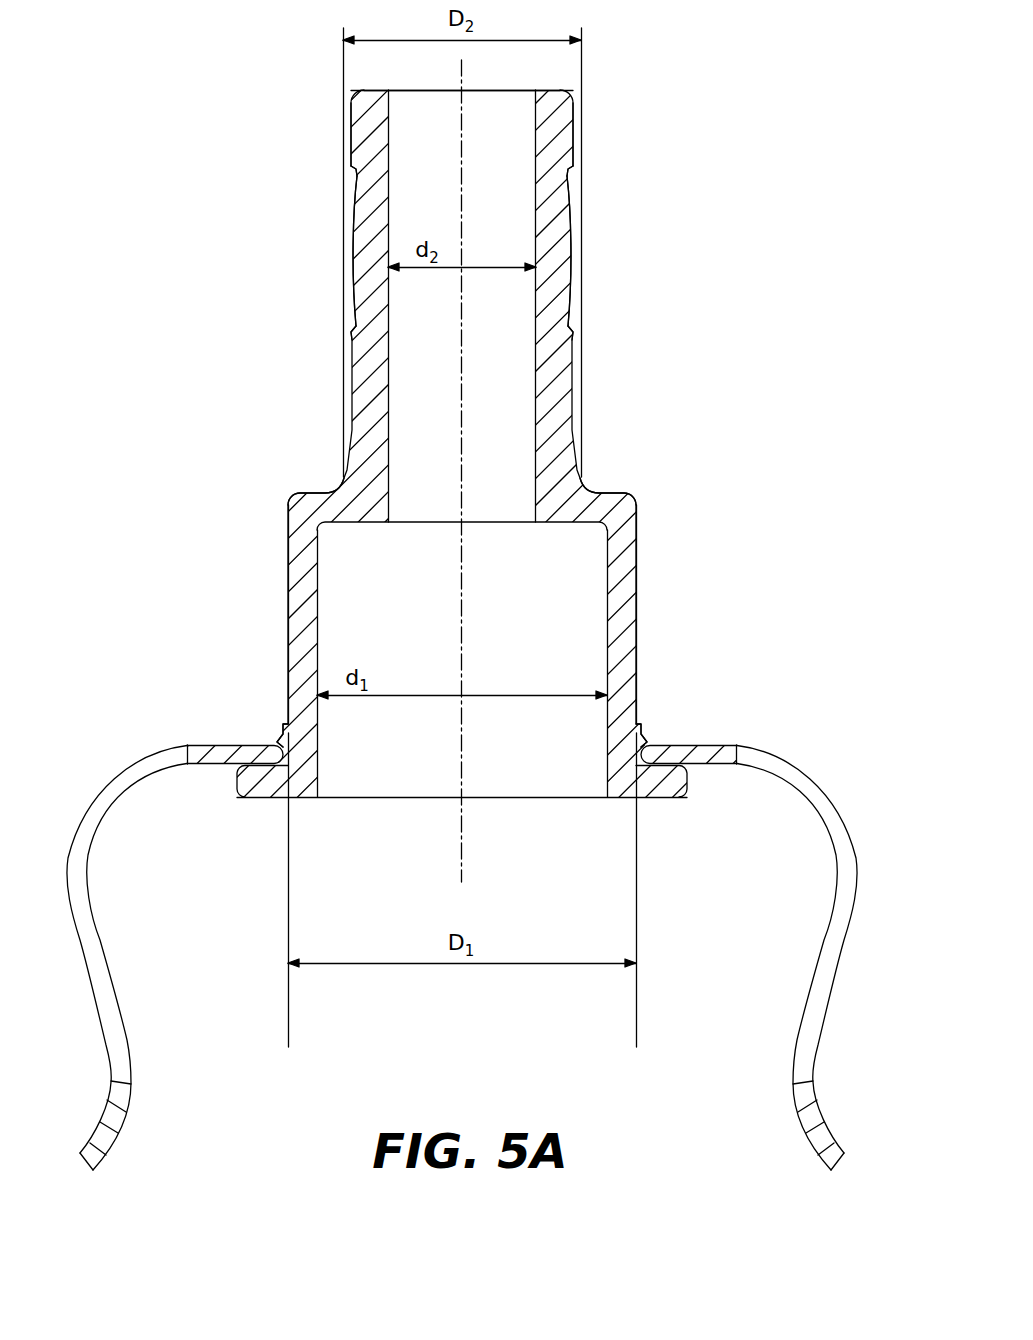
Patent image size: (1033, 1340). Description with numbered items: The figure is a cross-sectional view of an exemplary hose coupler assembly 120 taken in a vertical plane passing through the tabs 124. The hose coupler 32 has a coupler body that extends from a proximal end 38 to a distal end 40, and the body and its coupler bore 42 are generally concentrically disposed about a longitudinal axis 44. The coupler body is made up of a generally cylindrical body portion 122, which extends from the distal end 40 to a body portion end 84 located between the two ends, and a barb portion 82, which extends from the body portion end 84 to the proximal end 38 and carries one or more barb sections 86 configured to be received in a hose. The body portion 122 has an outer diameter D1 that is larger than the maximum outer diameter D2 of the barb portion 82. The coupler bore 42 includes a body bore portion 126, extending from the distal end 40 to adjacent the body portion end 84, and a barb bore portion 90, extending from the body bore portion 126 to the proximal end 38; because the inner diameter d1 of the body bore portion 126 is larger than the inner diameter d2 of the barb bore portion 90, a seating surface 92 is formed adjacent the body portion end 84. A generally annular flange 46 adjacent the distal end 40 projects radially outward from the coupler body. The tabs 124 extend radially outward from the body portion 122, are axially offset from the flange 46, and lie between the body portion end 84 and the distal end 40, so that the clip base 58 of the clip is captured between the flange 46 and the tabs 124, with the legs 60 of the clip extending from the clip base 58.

The hose coupler assembly 120 is at (727, 153).
The proximal end 38 is at (325, 77).
The coupler bore 42 is at (490, 89).
The longitudinal axis 44 is at (461, 60).
The barb bore portion 90 is at (503, 215).
The barb section 86 is at (692, 182).
The barb portion 82 is at (358, 280).
The hose coupler 32 is at (568, 348).
The body portion end 84 is at (641, 487).
The seating surface 92 is at (362, 525).
The body portion 122 is at (627, 592).
The body bore portion 126 is at (587, 660).
The distal end 40 is at (383, 812).
The flange 46 is at (268, 790).
The tab 124 is at (278, 742).
The clip base 58 is at (213, 748).
The leg 60 is at (126, 1112).